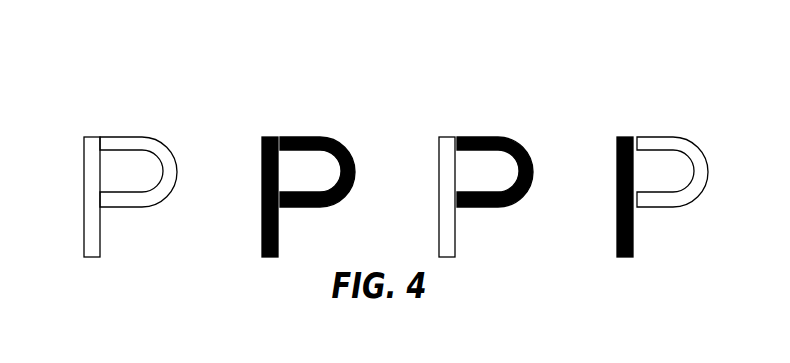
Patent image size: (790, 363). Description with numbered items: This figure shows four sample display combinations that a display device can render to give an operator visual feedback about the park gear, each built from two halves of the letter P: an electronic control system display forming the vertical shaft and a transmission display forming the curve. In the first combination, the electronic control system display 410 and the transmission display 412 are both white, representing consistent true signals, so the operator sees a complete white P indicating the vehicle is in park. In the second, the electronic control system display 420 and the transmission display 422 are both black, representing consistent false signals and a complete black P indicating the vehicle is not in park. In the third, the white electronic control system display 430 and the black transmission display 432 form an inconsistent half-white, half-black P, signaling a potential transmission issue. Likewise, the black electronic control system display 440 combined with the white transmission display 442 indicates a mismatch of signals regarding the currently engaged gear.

The electronic control system display 410 is at (90, 136).
The transmission display 412 is at (136, 136).
The electronic control system display 420 is at (268, 136).
The transmission display 422 is at (314, 136).
The electronic control system display 430 is at (445, 136).
The transmission display 432 is at (491, 136).
The electronic control system display 440 is at (623, 136).
The transmission display 442 is at (669, 136).